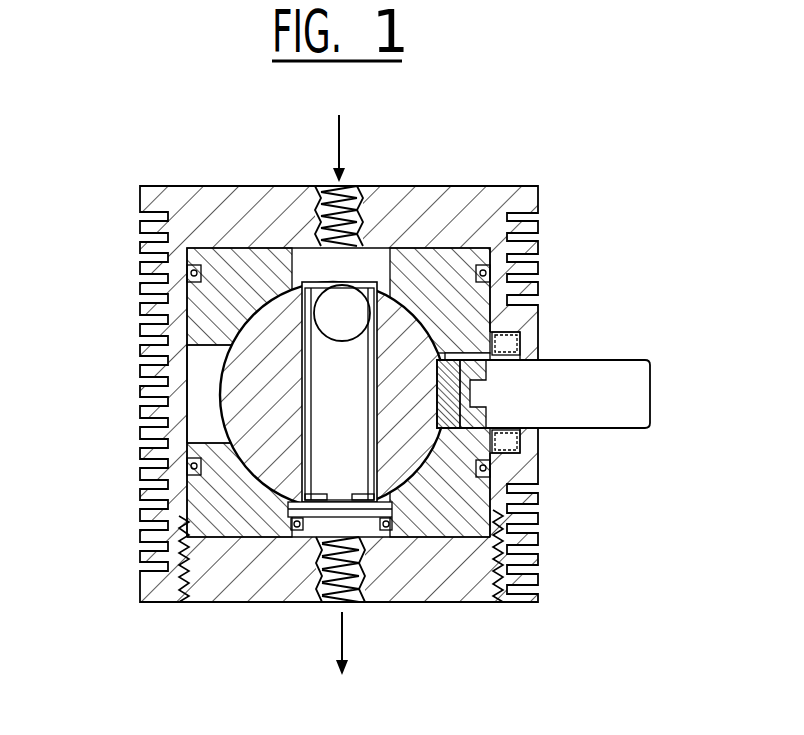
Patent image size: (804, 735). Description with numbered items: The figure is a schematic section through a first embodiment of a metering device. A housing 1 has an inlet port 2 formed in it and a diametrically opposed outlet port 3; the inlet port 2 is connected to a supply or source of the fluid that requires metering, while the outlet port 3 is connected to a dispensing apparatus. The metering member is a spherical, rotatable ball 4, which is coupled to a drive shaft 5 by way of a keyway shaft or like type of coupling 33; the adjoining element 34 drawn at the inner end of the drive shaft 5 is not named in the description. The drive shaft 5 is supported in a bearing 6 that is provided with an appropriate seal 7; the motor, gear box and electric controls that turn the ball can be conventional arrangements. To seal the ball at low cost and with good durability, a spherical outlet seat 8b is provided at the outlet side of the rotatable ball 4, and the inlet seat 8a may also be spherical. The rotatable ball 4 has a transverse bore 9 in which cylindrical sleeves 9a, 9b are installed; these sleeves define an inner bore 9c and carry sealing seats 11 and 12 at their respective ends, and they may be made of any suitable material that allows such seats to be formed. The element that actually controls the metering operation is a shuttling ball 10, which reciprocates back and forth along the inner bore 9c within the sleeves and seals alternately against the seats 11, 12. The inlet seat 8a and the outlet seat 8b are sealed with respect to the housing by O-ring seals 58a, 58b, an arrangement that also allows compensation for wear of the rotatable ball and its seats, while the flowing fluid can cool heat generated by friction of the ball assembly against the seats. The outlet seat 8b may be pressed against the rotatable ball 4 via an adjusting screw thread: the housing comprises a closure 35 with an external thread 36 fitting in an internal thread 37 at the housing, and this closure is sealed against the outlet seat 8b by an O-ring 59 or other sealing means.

The housing 1 is at (425, 210).
The inlet port 2 is at (340, 197).
The outlet port 3 is at (342, 590).
The ball 4 is at (330, 357).
The drive shaft 5 is at (608, 392).
The bearing 6 is at (530, 416).
The seal 7 is at (527, 445).
The inlet seat 8a is at (230, 266).
The outlet seat 8b is at (222, 520).
The transverse bore 9 is at (235, 264).
The cylindrical sleeve 9a is at (262, 372).
The cylindrical sleeve 9b is at (228, 440).
The inner bore 9c is at (215, 313).
The shuttling ball 10 is at (355, 322).
The sealing seat 11 is at (313, 285).
The sealing seat 12 is at (365, 505).
The coupling 33 is at (497, 372).
The stem coupling 34 is at (477, 397).
The closure 35 is at (245, 572).
The external thread 36 is at (497, 592).
The internal thread 37 is at (215, 573).
The O-ring seal 58a is at (487, 272).
The O-ring seal 58b is at (187, 470).
The O-ring 59 is at (297, 512).